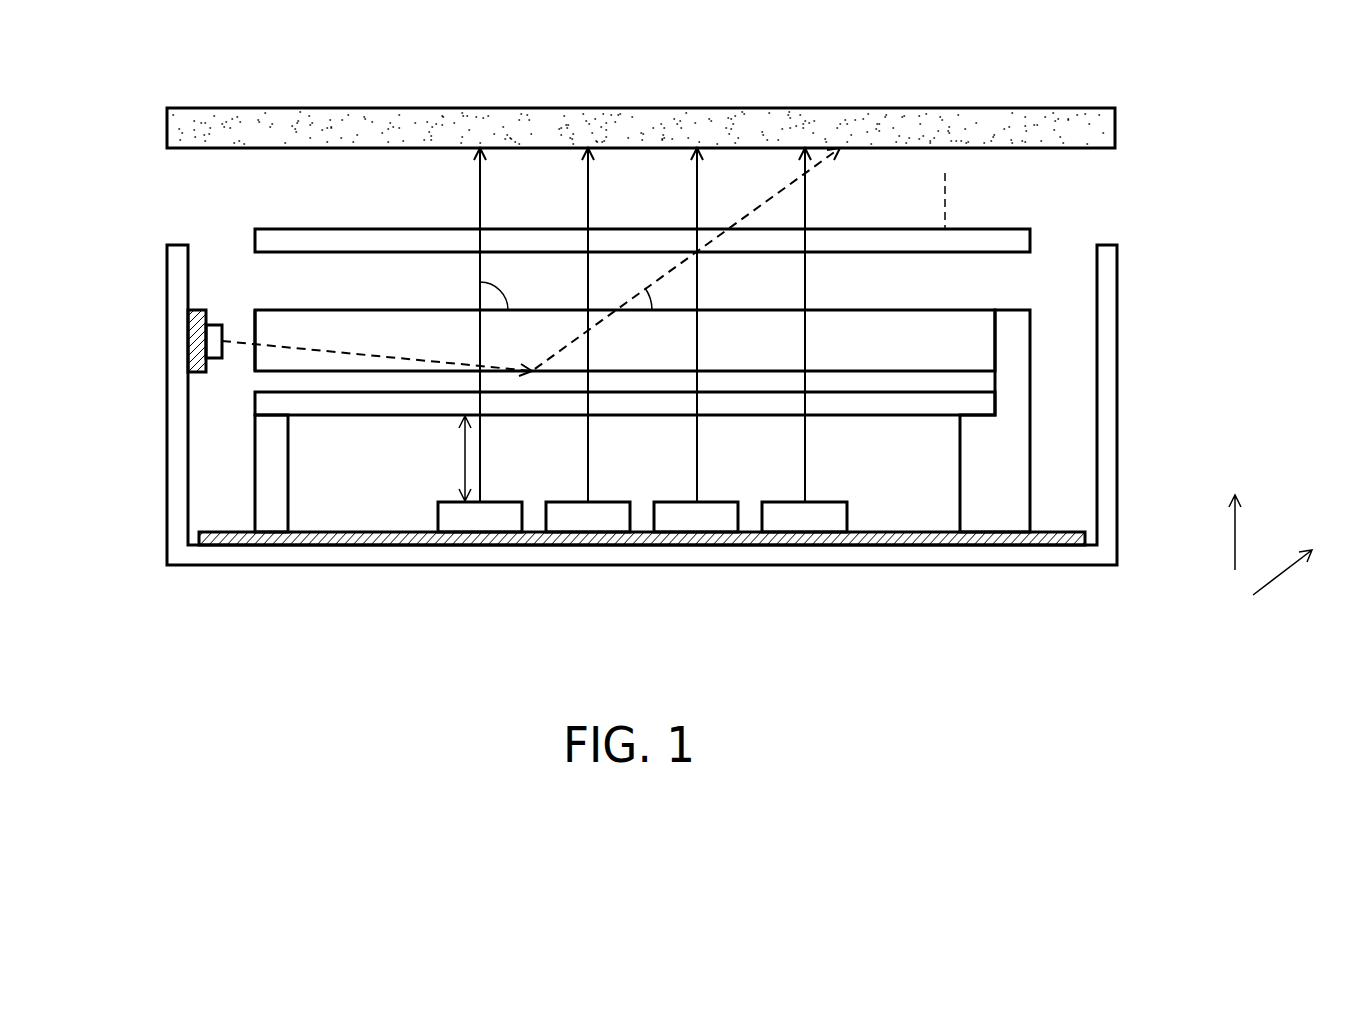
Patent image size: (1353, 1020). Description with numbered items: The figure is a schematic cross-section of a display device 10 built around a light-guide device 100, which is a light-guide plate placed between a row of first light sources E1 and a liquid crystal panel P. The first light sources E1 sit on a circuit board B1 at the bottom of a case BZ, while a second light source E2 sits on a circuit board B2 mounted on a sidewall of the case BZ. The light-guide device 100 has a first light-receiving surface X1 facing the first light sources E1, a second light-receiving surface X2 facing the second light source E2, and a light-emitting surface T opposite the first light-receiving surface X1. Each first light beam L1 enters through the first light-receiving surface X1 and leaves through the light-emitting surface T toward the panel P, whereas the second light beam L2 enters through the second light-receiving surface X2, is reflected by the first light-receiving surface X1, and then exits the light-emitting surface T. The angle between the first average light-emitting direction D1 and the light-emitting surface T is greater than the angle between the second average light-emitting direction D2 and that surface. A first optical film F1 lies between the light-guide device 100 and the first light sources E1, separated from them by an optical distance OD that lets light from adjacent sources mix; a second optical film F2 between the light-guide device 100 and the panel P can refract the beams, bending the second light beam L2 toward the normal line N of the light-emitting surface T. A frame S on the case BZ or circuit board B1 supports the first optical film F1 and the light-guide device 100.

The display device 10 is at (1188, 677).
The light-guide device 100 is at (952, 340).
The liquid crystal panel P is at (197, 127).
The second optical film F2 is at (280, 238).
The first optical film F1 is at (275, 404).
The light-emitting surface T is at (377, 310).
The second light-receiving surface X2 is at (255, 318).
The second light source E2 is at (213, 335).
The circuit board B2 is at (197, 348).
The frame S is at (272, 518).
The case BZ is at (1105, 408).
The circuit board B1 is at (707, 538).
The first light source E1 is at (612, 518).
The first light beam L1 is at (828, 470).
The second light beam L2 is at (822, 163).
The optical distance OD is at (448, 458).
The first light-receiving surface X1 is at (417, 372).
The normal line N is at (948, 200).
The first average light-emitting direction D1 is at (1256, 532).
The second average light-emitting direction D2 is at (1291, 579).